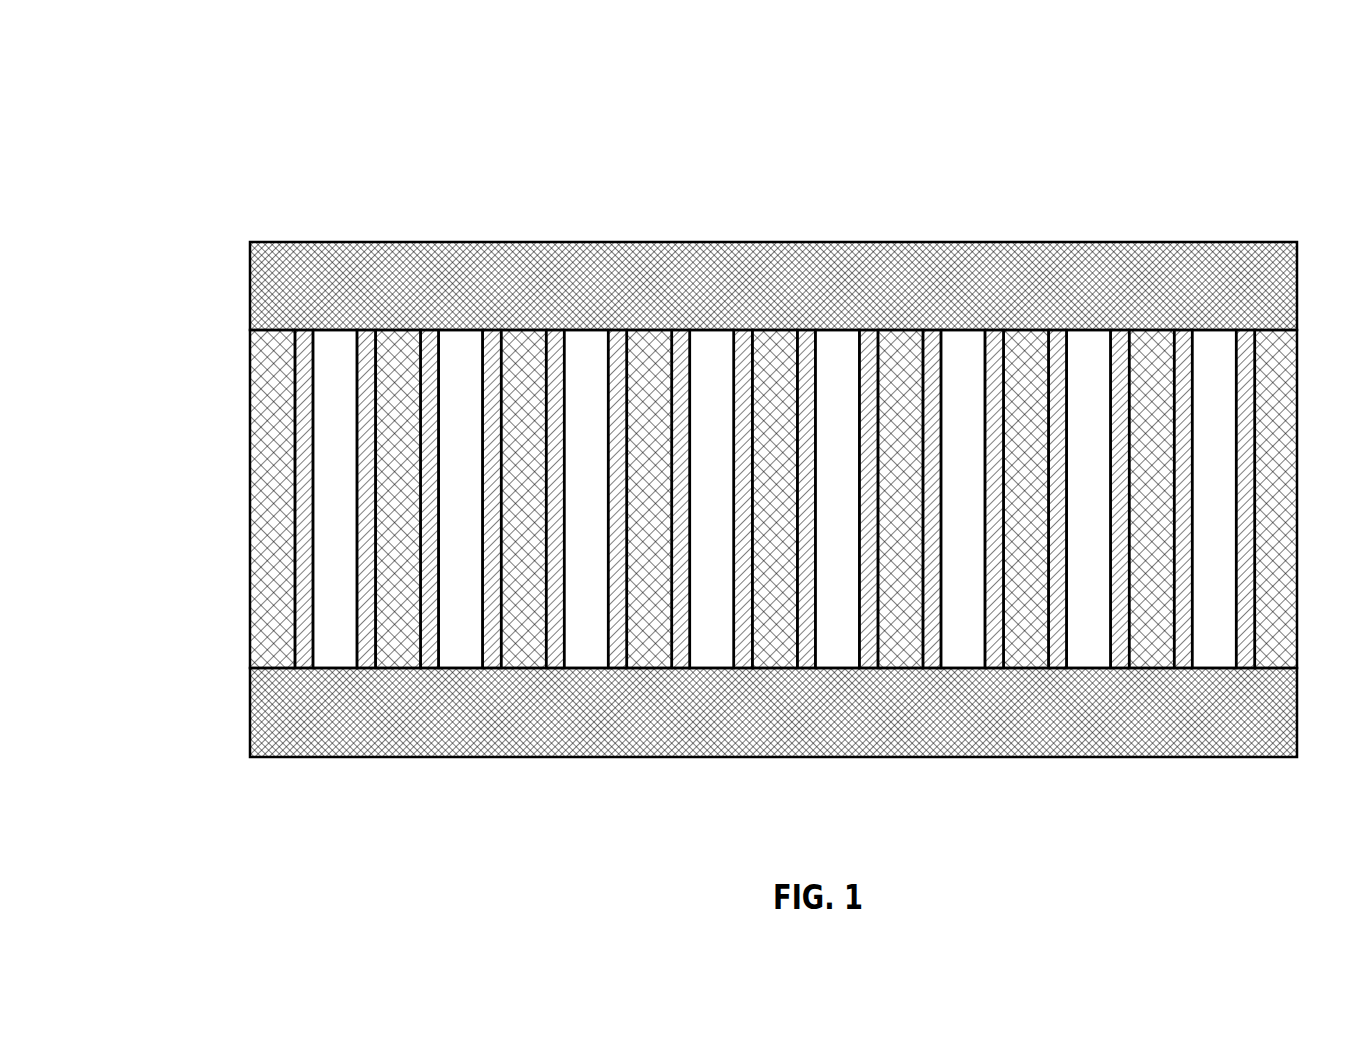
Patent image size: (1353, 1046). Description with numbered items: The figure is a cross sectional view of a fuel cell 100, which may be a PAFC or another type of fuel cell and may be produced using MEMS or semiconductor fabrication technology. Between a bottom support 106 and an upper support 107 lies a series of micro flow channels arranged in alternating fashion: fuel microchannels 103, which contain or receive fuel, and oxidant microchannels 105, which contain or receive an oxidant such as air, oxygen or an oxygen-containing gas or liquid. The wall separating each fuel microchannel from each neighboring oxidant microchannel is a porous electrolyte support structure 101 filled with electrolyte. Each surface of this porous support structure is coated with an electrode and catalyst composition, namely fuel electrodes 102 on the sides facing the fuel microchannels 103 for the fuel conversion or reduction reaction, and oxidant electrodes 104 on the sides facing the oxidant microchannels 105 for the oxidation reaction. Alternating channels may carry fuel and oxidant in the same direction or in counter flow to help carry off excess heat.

The fuel cell 100 is at (414, 86).
The porous electrolyte support structure 101 is at (250, 488).
The fuel electrodes 102 is at (345, 668).
The fuel microchannels 103 is at (323, 347).
The oxidant electrodes 104 is at (470, 668).
The oxidant microchannels 105 is at (457, 348).
The bottom support 106 is at (1197, 758).
The upper support 107 is at (1165, 243).